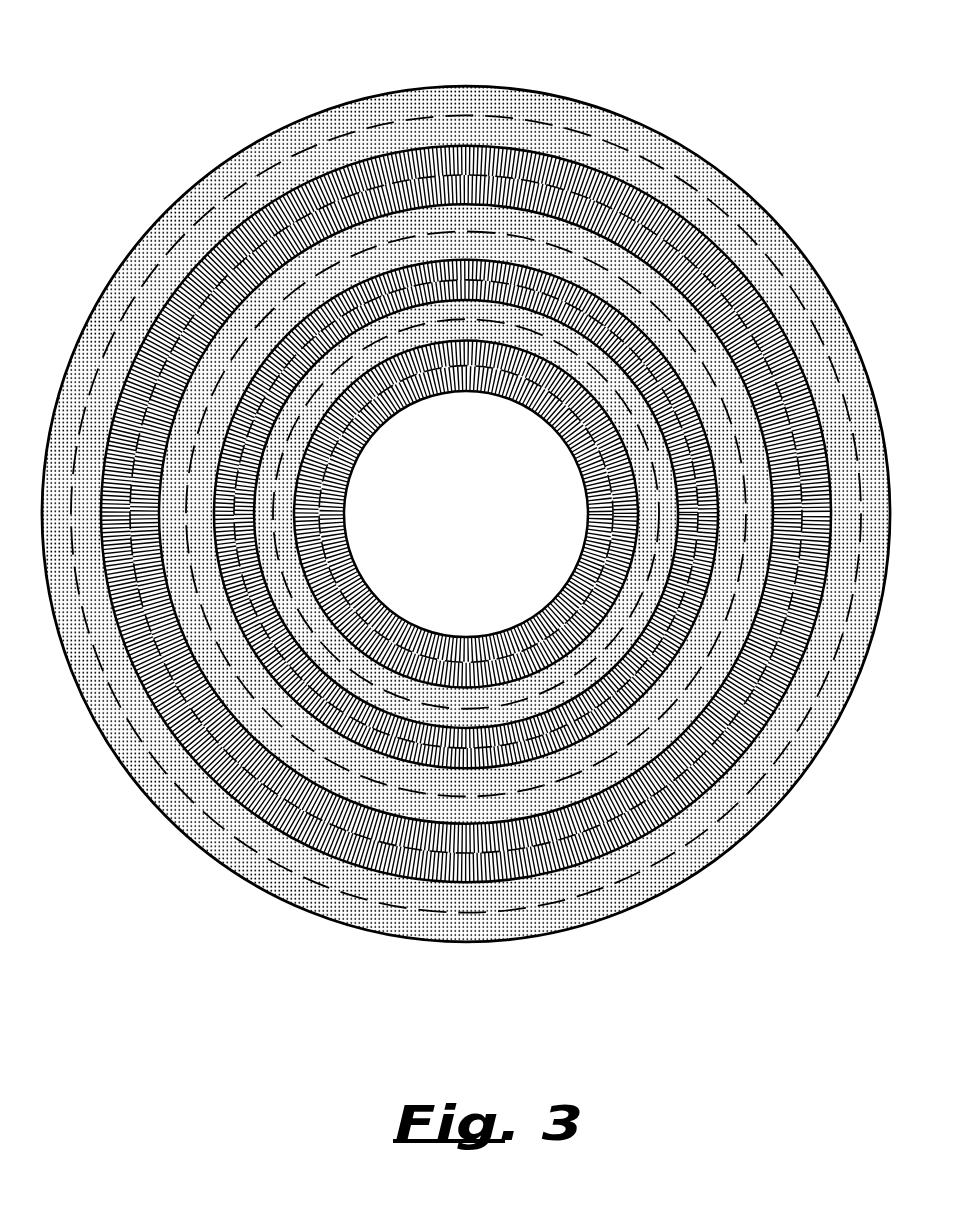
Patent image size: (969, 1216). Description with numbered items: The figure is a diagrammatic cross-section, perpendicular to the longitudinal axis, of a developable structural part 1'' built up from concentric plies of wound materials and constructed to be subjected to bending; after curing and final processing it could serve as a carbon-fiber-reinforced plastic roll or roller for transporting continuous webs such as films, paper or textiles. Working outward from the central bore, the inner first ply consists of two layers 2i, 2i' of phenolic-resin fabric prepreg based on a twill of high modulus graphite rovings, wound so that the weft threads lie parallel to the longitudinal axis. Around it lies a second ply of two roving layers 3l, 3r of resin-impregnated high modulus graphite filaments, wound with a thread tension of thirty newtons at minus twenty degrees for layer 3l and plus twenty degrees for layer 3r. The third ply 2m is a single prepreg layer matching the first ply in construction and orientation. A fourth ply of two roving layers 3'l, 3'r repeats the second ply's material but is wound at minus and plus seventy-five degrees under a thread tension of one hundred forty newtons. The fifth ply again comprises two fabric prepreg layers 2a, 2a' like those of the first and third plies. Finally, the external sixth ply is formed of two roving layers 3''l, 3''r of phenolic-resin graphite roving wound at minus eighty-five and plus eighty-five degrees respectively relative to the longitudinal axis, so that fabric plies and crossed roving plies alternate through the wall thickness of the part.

The developable structural part 1'' is at (466, 473).
The layer of the inner first ply 2i is at (466, 514).
The layer of the inner first ply 2i' is at (466, 513).
The roving layer of the second ply 3l is at (623, 412).
The roving layer of the second ply 3r is at (663, 456).
The third ply 2m is at (690, 512).
The roving layer of the fourth ply 3'l is at (503, 539).
The roving layer of the fourth ply 3'r is at (470, 554).
The layer of the fifth ply 2a is at (466, 548).
The layer of the fifth ply 2a' is at (466, 550).
The roving layer of the external sixth ply 3''l is at (466, 548).
The roving layer of the external sixth ply 3''r is at (466, 548).